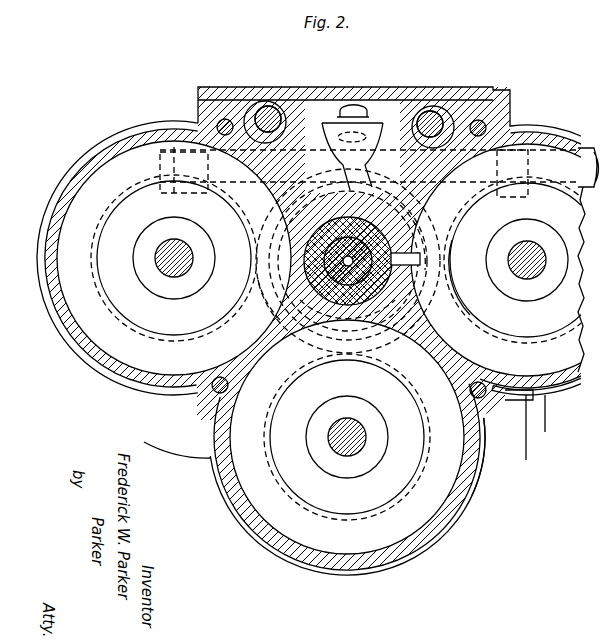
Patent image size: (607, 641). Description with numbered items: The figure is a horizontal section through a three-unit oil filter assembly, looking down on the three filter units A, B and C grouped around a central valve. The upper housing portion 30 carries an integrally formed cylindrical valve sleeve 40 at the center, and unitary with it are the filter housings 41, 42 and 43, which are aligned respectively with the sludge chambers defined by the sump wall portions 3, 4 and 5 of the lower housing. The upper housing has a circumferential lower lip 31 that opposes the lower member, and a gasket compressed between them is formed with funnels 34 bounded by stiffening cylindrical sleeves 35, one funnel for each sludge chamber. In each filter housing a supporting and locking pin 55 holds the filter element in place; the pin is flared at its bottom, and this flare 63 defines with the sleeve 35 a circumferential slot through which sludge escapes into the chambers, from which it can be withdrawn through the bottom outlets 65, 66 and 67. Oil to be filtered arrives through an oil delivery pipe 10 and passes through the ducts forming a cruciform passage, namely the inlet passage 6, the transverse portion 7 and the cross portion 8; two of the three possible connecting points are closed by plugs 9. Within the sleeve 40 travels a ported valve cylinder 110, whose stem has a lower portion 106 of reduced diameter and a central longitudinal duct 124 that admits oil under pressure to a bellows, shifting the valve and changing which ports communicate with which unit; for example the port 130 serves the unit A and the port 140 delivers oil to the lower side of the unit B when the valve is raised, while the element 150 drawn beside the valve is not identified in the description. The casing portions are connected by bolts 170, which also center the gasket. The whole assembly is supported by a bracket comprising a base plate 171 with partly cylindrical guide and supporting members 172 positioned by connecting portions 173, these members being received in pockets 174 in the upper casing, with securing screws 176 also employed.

The sump wall portion 3 is at (58, 351).
The sump wall portion 4 is at (397, 576).
The sump wall portion 5 is at (577, 401).
The inlet passage 6 is at (350, 183).
The transverse portion 7 is at (257, 196).
The cross portion 8 is at (381, 118).
The plug 9 is at (359, 106).
The oil delivery pipe 10 is at (583, 148).
The upper housing portion 30 is at (477, 468).
The lower lip 31 is at (144, 442).
The funnel 34 is at (86, 246).
The cylindrical sleeve 35 is at (108, 222).
The valve sleeve 40 is at (297, 293).
The filter housing 41 is at (106, 348).
The filter housing 42 is at (300, 560).
The filter housing 43 is at (532, 425).
The supporting and locking pin 55 is at (167, 278).
The flared bottom of pin 63 is at (138, 279).
The bottom outlet 65 is at (266, 311).
The bottom outlet 66 is at (371, 334).
The bottom outlet 67 is at (474, 309).
The lower portion of reduced diameter 106 is at (429, 279).
The ported valve cylinder 110 is at (411, 238).
The central longitudinal duct 124 is at (388, 290).
The port 130 is at (256, 253).
The port 140 is at (343, 325).
The drive rod 150 is at (421, 257).
The bolt 170 is at (218, 122).
The base plate 171 is at (231, 88).
The guide and supporting member 172 is at (268, 99).
The connecting portion 173 is at (283, 106).
The pocket 174 is at (305, 98).
The securing screw 176 is at (462, 97).
The filter unit A is at (94, 132).
The filter unit B is at (348, 584).
The filter unit C is at (556, 112).